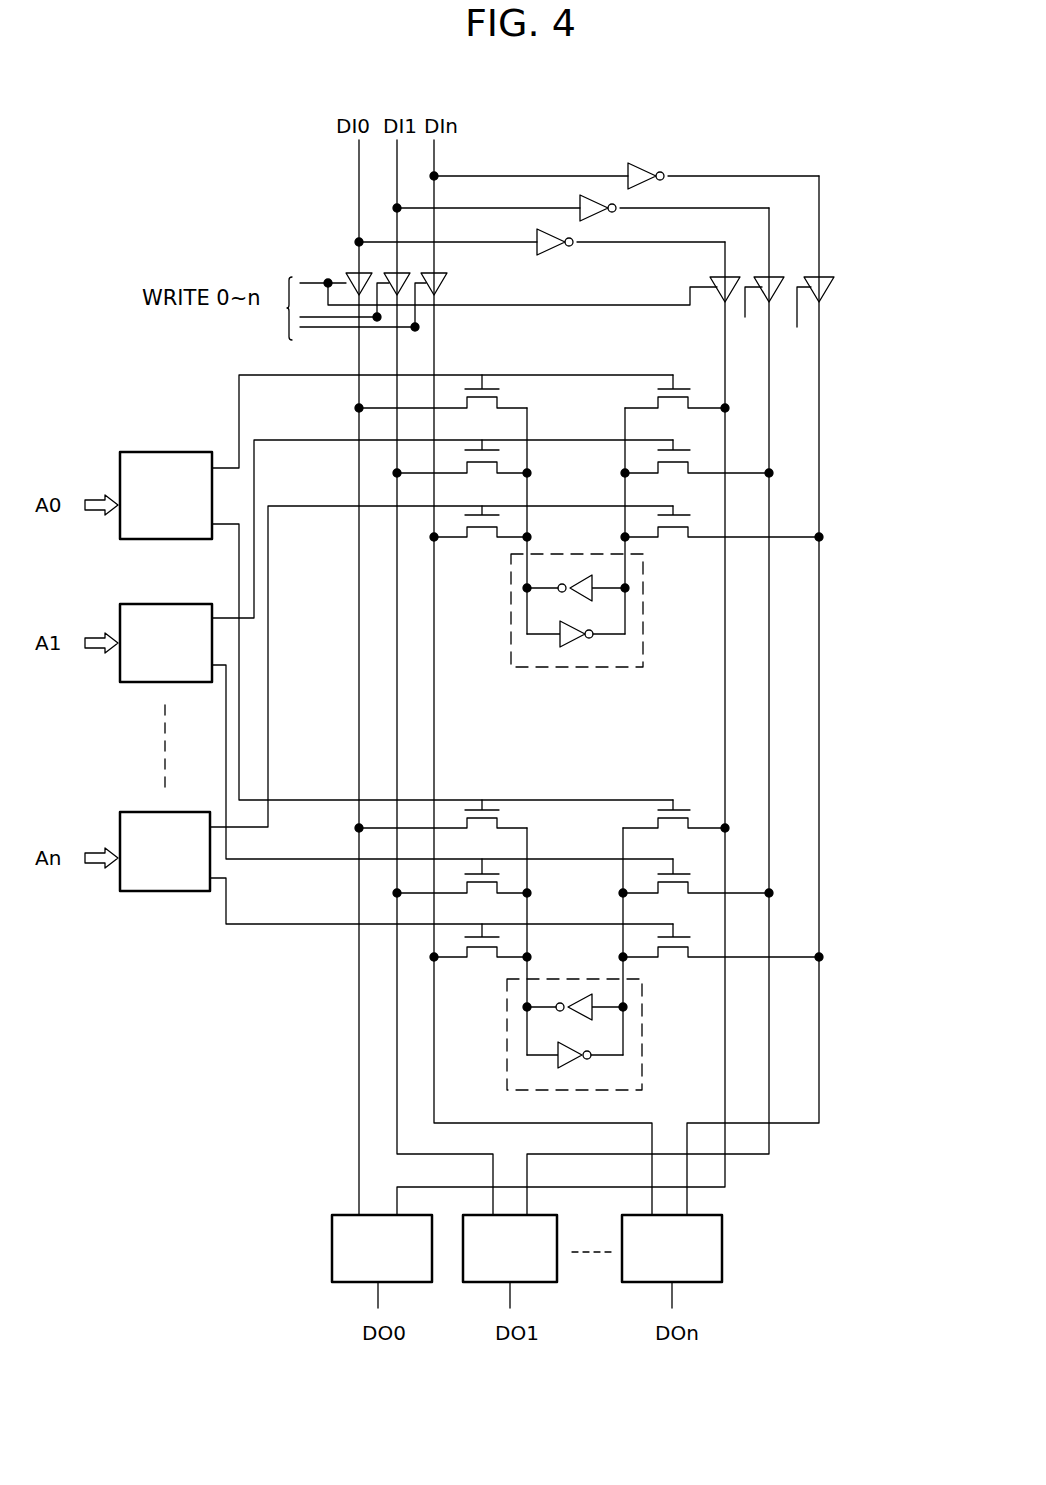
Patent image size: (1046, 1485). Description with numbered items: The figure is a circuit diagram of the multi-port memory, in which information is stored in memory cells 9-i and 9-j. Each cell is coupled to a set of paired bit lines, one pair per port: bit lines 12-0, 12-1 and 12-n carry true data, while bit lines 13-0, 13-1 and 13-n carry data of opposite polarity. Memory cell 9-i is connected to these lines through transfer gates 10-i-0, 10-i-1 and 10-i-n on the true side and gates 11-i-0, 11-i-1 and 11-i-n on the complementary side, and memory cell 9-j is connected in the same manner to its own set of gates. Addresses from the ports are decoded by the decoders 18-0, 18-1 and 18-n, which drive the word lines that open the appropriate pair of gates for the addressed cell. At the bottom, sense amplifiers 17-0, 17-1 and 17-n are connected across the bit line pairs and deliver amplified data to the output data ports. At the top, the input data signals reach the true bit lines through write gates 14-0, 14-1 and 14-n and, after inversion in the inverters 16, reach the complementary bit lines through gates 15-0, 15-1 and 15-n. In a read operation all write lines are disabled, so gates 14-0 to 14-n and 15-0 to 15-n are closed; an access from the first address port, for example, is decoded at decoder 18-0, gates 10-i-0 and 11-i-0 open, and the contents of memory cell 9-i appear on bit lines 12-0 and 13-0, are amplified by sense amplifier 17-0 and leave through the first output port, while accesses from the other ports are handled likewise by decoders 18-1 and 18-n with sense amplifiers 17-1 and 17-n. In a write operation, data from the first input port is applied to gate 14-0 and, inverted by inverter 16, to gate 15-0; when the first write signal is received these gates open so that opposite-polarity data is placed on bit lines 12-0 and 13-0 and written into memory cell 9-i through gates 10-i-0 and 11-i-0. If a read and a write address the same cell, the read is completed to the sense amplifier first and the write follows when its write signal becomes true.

The inverter 16 is at (682, 152).
The gate 14-0 is at (346, 274).
The gate 14-1 is at (384, 274).
The gate 14-n is at (447, 282).
The gate 15-0 is at (712, 279).
The gate 15-1 is at (773, 272).
The gate 15-n is at (828, 280).
The gate 10-i-0 is at (503, 398).
The gate 10-i-1 is at (505, 460).
The gate 10-i-n is at (503, 524).
The gate 11-i-0 is at (695, 402).
The gate 11-i-1 is at (697, 465).
The gate 11-i-n is at (708, 498).
The decoder DEC0 18-0 is at (175, 452).
The decoder DEC1 18-1 is at (158, 604).
The decoder DECn 18-n is at (168, 891).
The bit line 12-0 is at (358, 600).
The bit line 12-1 is at (396, 668).
The bit line 12-n is at (433, 745).
The bit line 13-0 is at (725, 720).
The bit line 13-1 is at (769, 750).
The bit line 13-n is at (819, 818).
The memory cell 9-i is at (577, 667).
The memory cell 9-j is at (642, 1050).
The sense amplifier SA0 17-0 is at (342, 1284).
The sense amplifier SA1 17-1 is at (535, 1284).
The sense amplifier SAn 17-n is at (712, 1284).